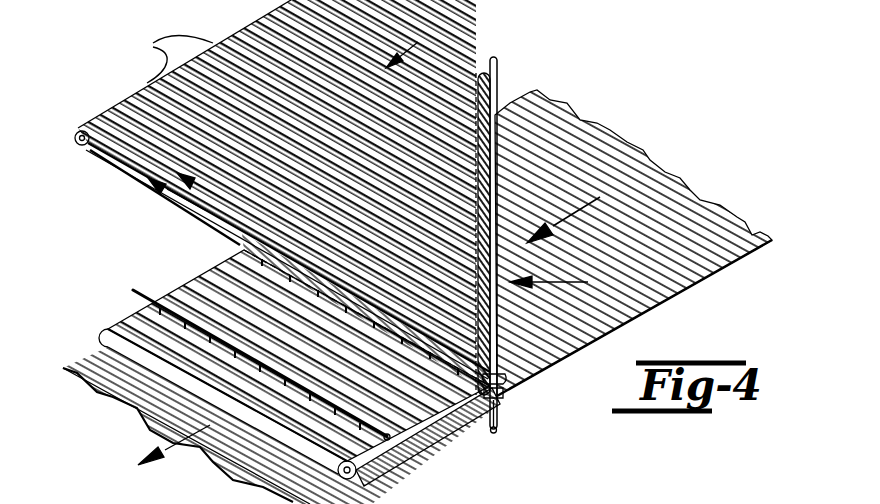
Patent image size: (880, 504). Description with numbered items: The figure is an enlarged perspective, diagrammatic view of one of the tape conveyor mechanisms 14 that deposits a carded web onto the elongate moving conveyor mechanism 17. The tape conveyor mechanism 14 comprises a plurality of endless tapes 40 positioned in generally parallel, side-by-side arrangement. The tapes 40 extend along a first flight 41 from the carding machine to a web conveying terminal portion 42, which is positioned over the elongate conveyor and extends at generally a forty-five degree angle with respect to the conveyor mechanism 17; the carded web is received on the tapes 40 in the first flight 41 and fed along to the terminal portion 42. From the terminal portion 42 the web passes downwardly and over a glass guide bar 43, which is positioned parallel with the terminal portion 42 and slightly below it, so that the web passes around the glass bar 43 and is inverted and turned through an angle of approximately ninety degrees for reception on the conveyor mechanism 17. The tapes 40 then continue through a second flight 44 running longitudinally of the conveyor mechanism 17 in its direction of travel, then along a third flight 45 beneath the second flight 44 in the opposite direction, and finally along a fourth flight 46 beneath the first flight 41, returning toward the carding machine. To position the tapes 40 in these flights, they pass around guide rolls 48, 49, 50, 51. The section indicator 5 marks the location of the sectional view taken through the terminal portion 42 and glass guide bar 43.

The tape conveyor mechanism 14 is at (414, 32).
The conveyor mechanism 17 is at (677, 187).
The endless tapes 40 is at (165, 56).
The first flight 41 is at (403, 5).
The web conveying terminal portion 42 is at (495, 132).
The glass guide bar 43 is at (497, 63).
The second flight 44 is at (197, 273).
The third flight 45 is at (425, 440).
The fourth flight 46 is at (166, 195).
The guide roll 48 is at (84, 148).
The guide roll 49 is at (505, 396).
The guide roll 50 is at (358, 482).
The guide roll 51 is at (503, 405).
The section line for FIG. 5 is at (582, 270).